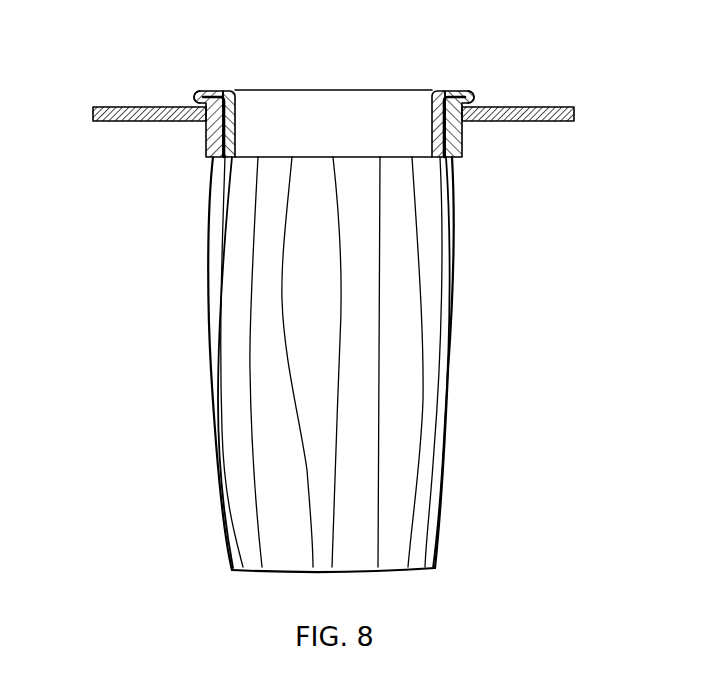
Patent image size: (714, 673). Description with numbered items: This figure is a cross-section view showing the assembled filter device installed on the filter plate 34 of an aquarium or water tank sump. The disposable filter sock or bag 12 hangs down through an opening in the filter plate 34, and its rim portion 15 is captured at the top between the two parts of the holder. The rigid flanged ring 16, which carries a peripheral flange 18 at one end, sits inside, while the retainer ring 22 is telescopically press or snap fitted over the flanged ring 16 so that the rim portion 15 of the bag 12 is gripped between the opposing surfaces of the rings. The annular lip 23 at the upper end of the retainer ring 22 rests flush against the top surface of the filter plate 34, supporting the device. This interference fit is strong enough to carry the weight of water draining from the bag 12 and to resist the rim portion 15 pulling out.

The filter bag 12 is at (443, 312).
The rim portion 15 is at (450, 133).
The flanged ring 16 is at (230, 117).
The peripheral flange 18 is at (207, 91).
The retainer ring 22 is at (212, 127).
The annular lip 23 is at (194, 100).
The filter plate 34 is at (507, 107).